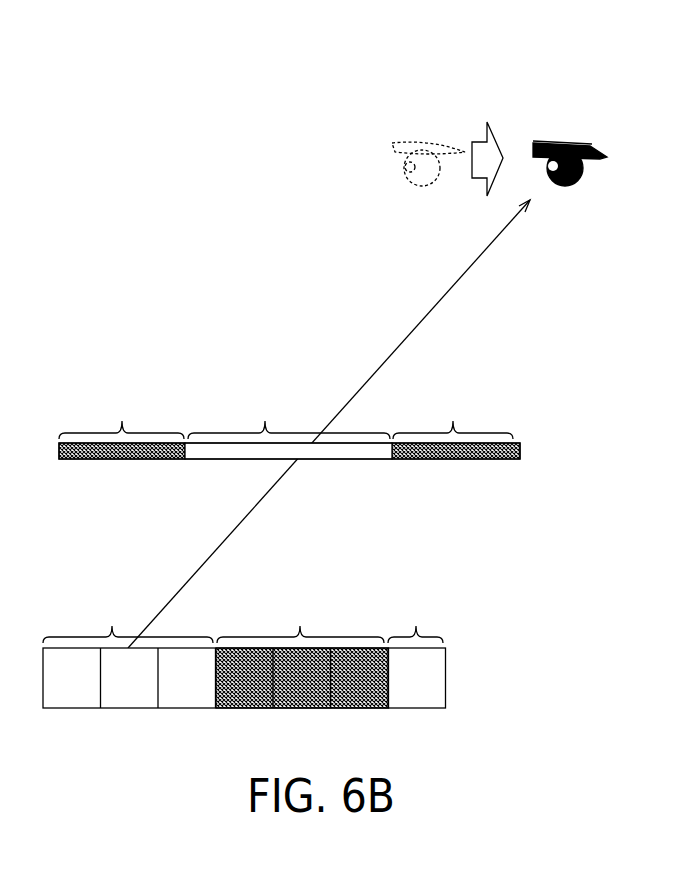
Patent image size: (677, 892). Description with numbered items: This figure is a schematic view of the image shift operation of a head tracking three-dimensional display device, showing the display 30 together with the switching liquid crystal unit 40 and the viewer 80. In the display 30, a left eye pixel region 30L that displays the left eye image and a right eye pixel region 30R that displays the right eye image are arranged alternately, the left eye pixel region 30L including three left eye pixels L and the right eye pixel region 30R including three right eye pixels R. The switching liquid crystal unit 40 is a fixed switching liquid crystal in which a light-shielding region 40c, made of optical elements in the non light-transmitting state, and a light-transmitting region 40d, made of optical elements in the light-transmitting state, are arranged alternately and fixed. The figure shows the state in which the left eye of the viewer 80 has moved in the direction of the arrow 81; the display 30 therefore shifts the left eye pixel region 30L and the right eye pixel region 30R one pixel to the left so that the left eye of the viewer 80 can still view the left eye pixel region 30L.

The display 30 is at (474, 680).
The left eye pixel region 30L is at (243, 617).
The right eye pixel region 30R is at (300, 617).
The switching liquid crystal unit 40 is at (343, 433).
The light-shielding region 40c is at (289, 423).
The light-transmitting region 40d is at (288, 423).
The viewer 80 is at (420, 142).
The arrow 81 is at (502, 143).